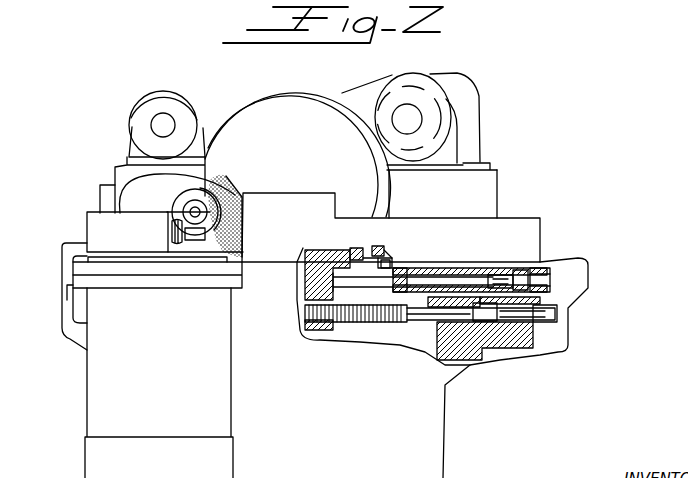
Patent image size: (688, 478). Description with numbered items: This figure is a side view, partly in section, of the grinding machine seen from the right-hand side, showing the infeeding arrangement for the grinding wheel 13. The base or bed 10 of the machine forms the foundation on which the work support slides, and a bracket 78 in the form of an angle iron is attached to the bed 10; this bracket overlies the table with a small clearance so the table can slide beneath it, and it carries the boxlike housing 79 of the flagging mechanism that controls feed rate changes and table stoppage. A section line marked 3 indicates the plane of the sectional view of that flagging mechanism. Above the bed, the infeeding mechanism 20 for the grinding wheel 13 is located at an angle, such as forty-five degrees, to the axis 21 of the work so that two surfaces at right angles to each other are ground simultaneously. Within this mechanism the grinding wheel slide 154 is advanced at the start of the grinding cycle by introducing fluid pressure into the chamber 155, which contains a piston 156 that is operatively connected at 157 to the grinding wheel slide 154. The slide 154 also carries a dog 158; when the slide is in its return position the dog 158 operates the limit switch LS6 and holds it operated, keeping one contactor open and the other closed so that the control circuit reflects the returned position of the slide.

The section line 3- 3 is at (87, 213).
The base or bed 10 is at (99, 394).
The grinding wheel 13 is at (232, 182).
The infeeding mechanism 20 is at (428, 338).
The axis of the work 21 is at (178, 193).
The bracket 78 is at (66, 268).
The housing 79 is at (96, 230).
The grinding wheel slide 154 is at (320, 250).
The chamber 155 is at (521, 278).
The piston 156 is at (499, 278).
The connection of piston to slide 157 is at (305, 292).
The dog 158 is at (362, 250).
The limit switch LS6 is at (390, 262).